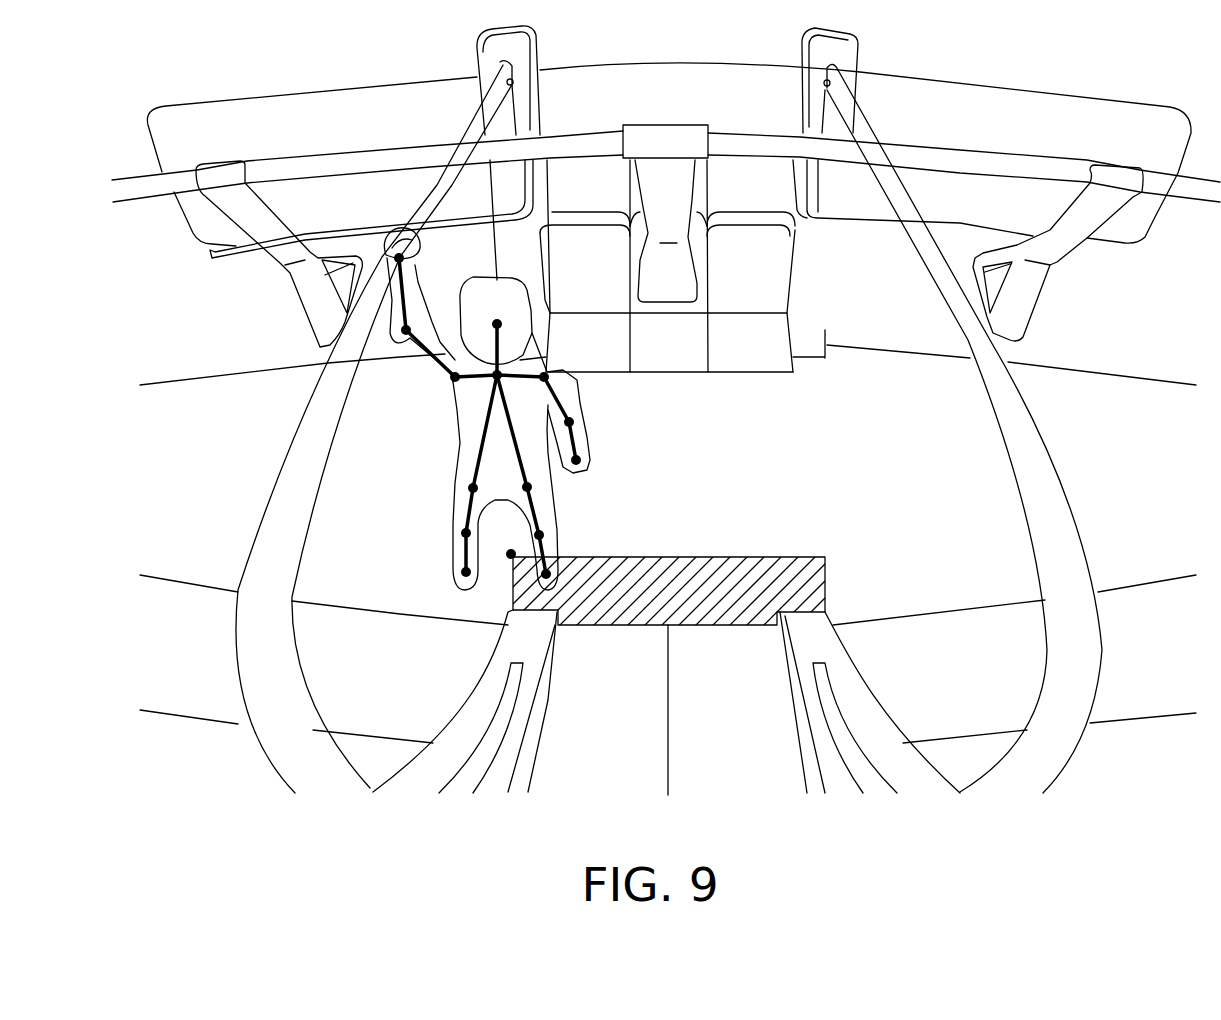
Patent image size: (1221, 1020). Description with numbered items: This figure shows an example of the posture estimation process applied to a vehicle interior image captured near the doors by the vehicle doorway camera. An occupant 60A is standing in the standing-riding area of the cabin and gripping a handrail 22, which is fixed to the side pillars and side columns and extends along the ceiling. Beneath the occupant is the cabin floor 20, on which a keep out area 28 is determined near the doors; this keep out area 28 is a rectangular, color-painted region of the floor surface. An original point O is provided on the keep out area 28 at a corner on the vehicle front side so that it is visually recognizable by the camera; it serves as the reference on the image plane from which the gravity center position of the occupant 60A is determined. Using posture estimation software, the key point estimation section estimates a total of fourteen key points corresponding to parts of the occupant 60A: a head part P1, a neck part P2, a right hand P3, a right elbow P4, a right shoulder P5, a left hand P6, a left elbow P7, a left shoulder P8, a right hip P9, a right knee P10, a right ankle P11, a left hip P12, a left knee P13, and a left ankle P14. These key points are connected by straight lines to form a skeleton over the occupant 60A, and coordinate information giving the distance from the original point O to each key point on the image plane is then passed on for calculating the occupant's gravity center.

The cabin floor 20 is at (858, 415).
The handrail 22 is at (295, 465).
The keep out area 28 is at (785, 570).
The occupant 60A is at (460, 307).
The original point O is at (511, 554).
The head part P1 is at (499, 320).
The neck part P2 is at (502, 363).
The right hand P3 is at (390, 257).
The right elbow P4 is at (400, 336).
The right shoulder P5 is at (452, 382).
The left hand P6 is at (581, 460).
The left elbow P7 is at (574, 422).
The left shoulder P8 is at (550, 377).
The right hip P9 is at (468, 489).
The right knee P10 is at (461, 534).
The right ankle P11 is at (461, 573).
The left hip P12 is at (532, 488).
The left knee P13 is at (544, 537).
The left ankle P14 is at (551, 574).